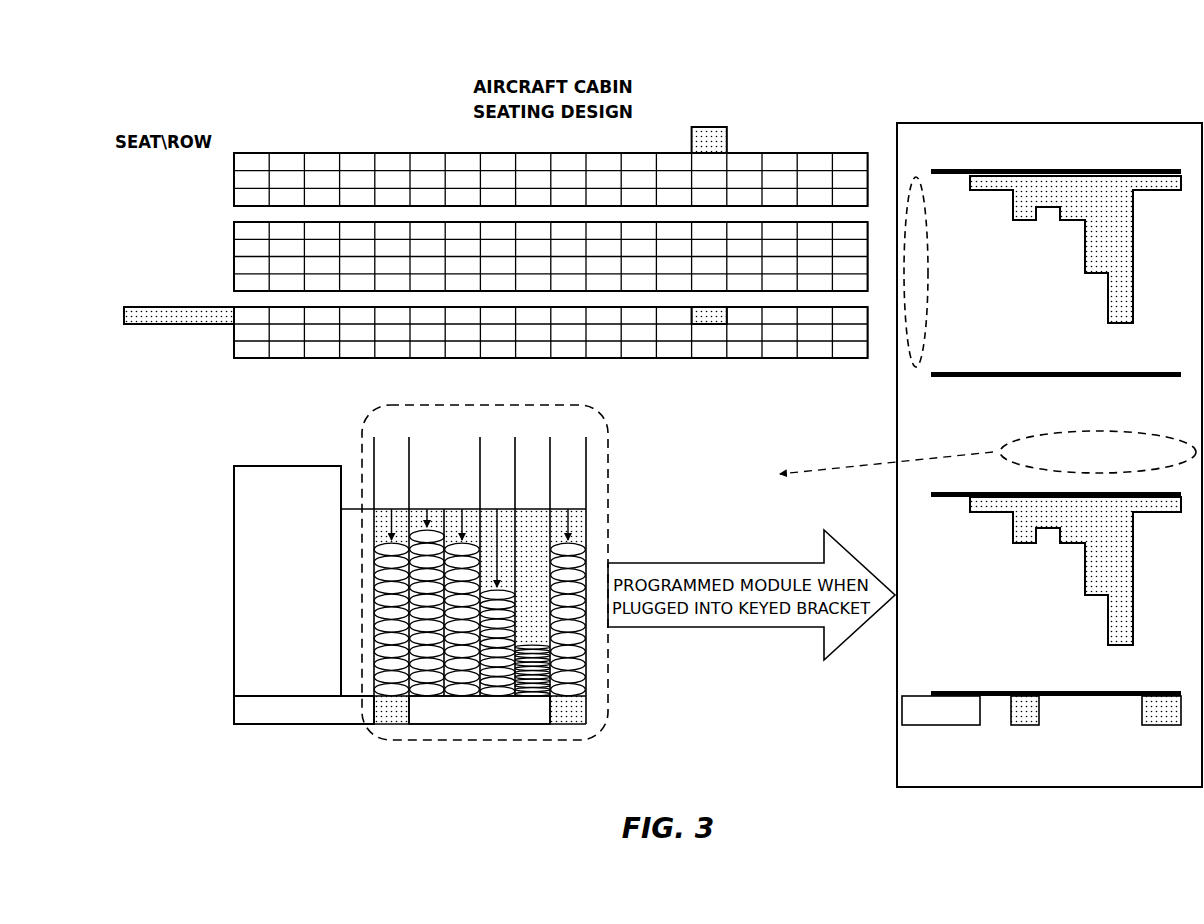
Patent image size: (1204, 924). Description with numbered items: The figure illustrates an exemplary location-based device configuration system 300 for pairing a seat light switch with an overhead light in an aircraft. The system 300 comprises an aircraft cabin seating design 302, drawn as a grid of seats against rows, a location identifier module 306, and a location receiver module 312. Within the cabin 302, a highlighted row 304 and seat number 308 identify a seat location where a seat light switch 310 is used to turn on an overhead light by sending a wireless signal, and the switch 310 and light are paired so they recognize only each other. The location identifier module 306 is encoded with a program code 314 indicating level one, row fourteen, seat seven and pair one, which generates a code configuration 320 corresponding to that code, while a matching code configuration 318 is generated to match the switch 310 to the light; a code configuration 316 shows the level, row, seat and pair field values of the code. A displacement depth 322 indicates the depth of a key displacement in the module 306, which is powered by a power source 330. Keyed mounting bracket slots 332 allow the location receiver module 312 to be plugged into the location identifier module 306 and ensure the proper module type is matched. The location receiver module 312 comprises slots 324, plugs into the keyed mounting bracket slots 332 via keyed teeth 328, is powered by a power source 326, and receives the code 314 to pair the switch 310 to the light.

The location-based device configuration system 300 is at (953, 40).
The aircraft cabin seating design 302 is at (240, 152).
The row 304 is at (720, 128).
The location identifier module 306 is at (1062, 123).
The seat number 308 is at (155, 324).
The seat light switch 310 is at (700, 325).
The location receiver module 312 is at (233, 565).
The program code 314 is at (720, 488).
The code configuration 316 is at (1007, 443).
The matching code configuration 318 is at (1073, 222).
The code configuration 320 is at (1073, 545).
The displacement depth 322 is at (918, 178).
The slots 324 is at (486, 742).
The power source 326 is at (253, 727).
The keyed teeth 328 is at (450, 715).
The power source 330 is at (897, 712).
The keyed mounting bracket slots 332 is at (1080, 710).